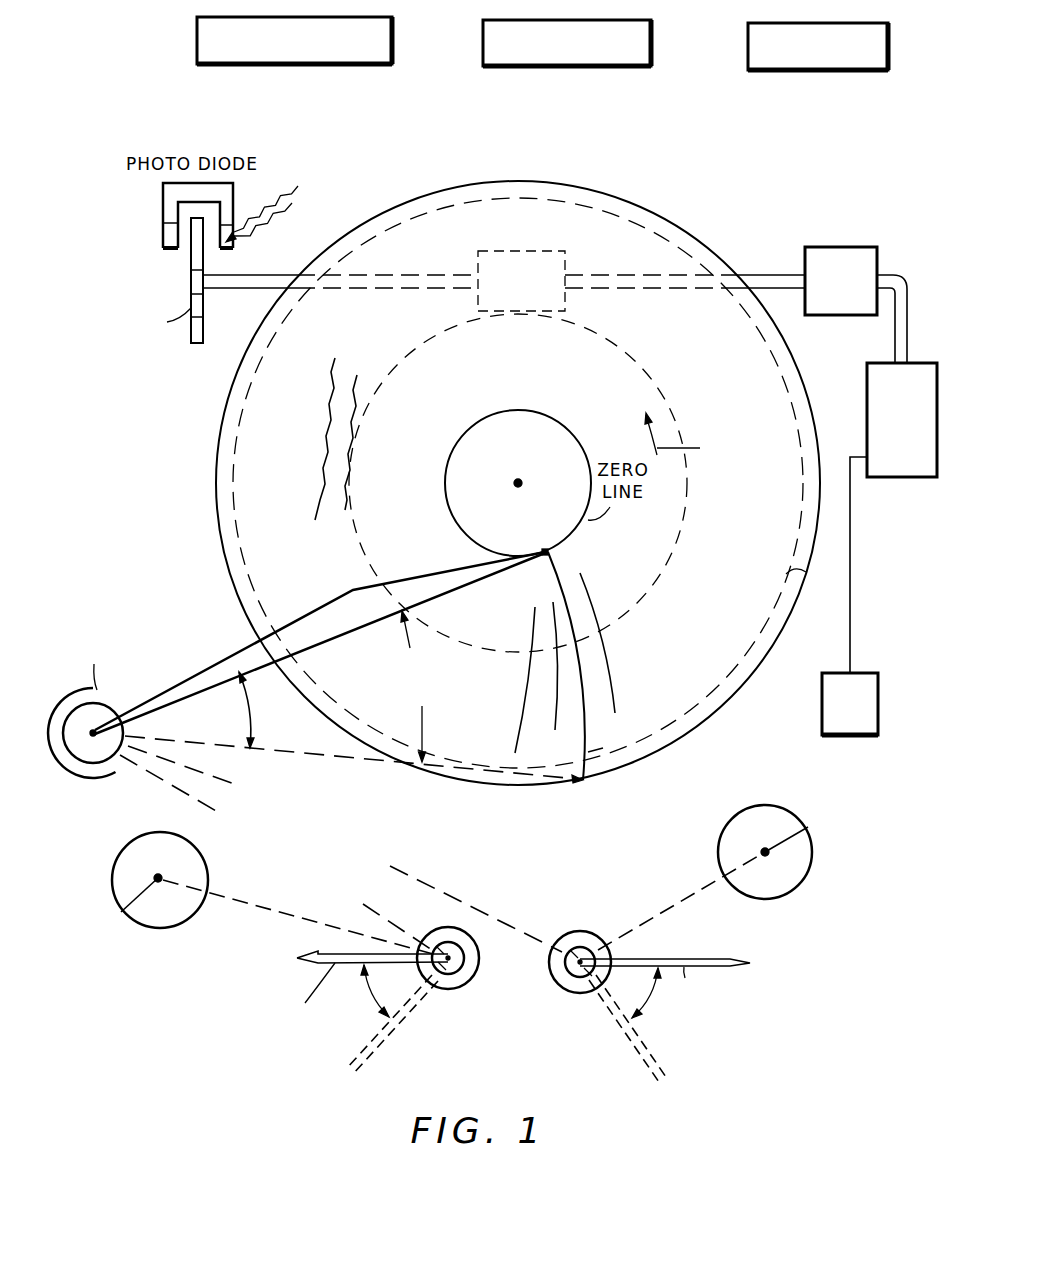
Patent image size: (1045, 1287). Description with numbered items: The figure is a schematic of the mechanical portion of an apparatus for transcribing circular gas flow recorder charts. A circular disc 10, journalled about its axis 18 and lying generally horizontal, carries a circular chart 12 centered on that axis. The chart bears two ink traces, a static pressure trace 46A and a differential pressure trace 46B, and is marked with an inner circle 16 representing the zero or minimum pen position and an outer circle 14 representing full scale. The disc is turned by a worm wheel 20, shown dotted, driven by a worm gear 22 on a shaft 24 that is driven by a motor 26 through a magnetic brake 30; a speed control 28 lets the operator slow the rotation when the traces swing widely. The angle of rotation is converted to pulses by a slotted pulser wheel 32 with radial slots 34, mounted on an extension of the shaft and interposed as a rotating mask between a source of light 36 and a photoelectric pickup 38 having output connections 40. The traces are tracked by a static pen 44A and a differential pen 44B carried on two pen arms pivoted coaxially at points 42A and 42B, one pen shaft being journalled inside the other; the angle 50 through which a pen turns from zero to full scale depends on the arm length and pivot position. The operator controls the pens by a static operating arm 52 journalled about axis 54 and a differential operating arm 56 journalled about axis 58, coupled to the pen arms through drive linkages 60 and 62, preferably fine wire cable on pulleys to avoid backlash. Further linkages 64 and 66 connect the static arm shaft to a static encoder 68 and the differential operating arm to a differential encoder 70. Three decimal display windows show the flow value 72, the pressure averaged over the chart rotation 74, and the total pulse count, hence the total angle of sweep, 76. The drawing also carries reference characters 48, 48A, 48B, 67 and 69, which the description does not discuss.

The circular disc 10 is at (220, 450).
The circular chart 12 is at (283, 353).
The outer circle 14 is at (246, 540).
The inner circle 16 is at (458, 446).
The axis 18 is at (521, 480).
The worm wheel 20 is at (660, 350).
The worm gear 22 is at (520, 250).
The shaft 24 is at (661, 275).
The motor 26 is at (868, 376).
The speed control 28 is at (822, 700).
The magnetic brake 30 is at (805, 262).
The pulser wheel 32 is at (191, 247).
The radial slots 34 is at (191, 293).
The source of light 36 is at (163, 237).
The photoelectric pickup 38 is at (233, 243).
The output connections 40 is at (292, 203).
The static pen arm pivot 42A is at (96, 728).
The differential pen arm pivot 42B is at (98, 730).
The static pen 44A is at (218, 661).
The differential pen 44B is at (307, 650).
The static pressure trace 46A is at (308, 472).
The differential pressure trace 46B is at (349, 504).
The time arc line 48 is at (576, 632).
The differential pen trace 48A is at (558, 645).
The differential pen trace 48B is at (528, 701).
The pen angle 50 is at (258, 714).
The static operating arm 52 is at (297, 960).
The static arm axis 54 is at (455, 982).
The differential operating arm 56 is at (646, 957).
The differential arm axis 58 is at (583, 931).
The static drive linkage 60 is at (230, 823).
The differential drive linkage 62 is at (465, 894).
The static encoder linkage 64 is at (336, 926).
The differential encoder linkage 66 is at (703, 889).
The static encoder pointer 67 is at (121, 913).
The static encoder 68 is at (115, 858).
The differential encoder pointer 69 is at (808, 827).
The differential encoder 70 is at (762, 805).
The flow display 72 is at (372, 65).
The average pressure display 74 is at (626, 67).
The time display 76 is at (775, 71).